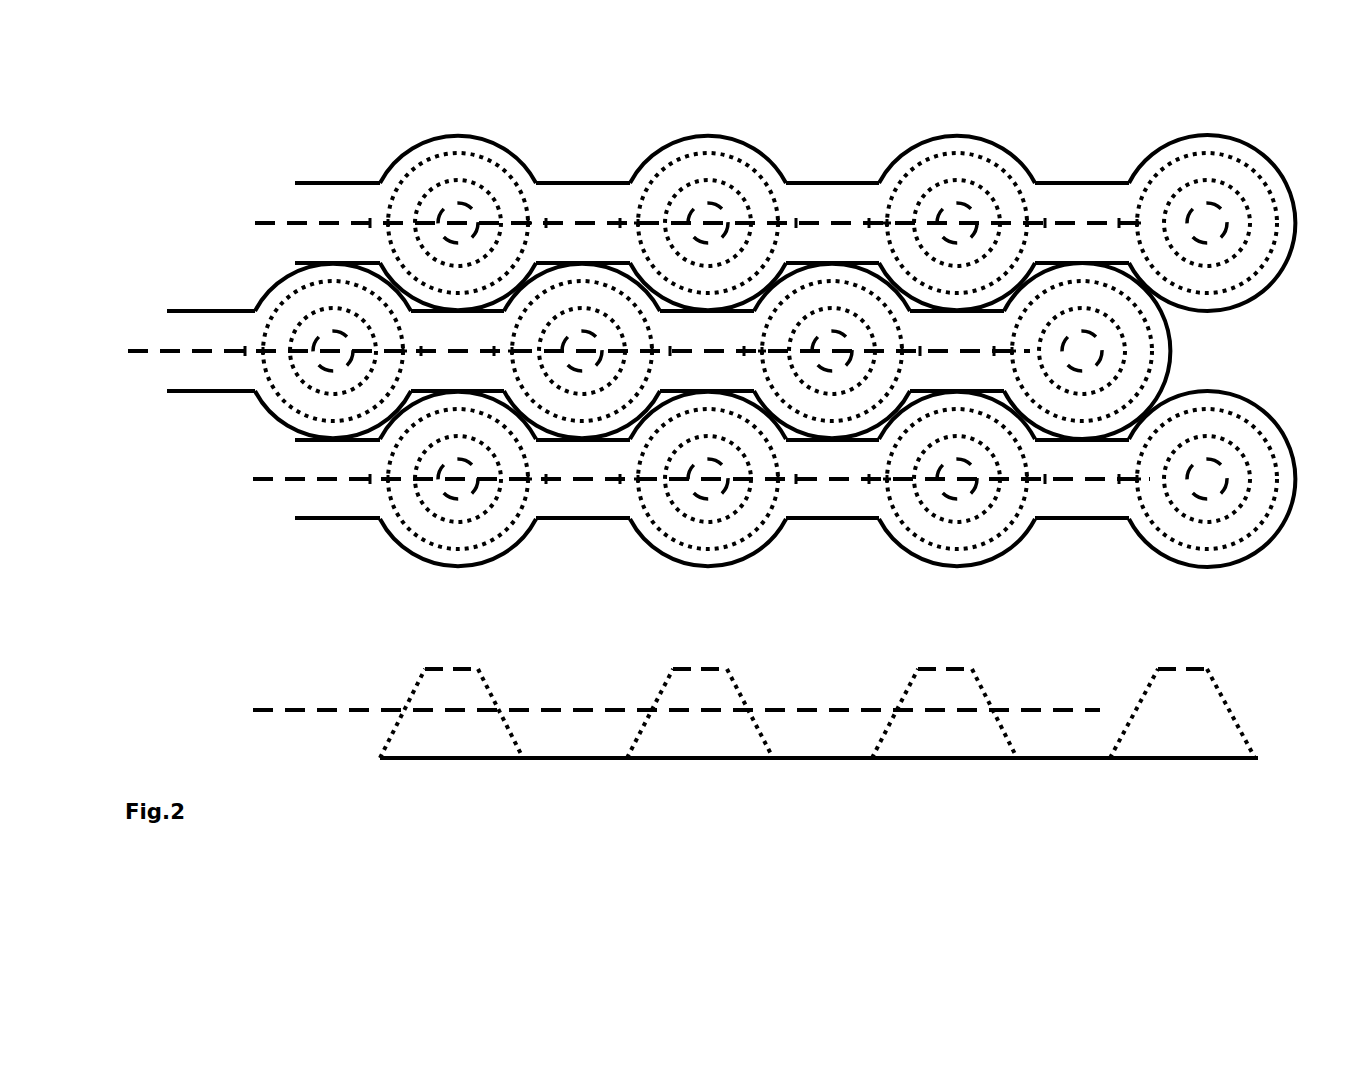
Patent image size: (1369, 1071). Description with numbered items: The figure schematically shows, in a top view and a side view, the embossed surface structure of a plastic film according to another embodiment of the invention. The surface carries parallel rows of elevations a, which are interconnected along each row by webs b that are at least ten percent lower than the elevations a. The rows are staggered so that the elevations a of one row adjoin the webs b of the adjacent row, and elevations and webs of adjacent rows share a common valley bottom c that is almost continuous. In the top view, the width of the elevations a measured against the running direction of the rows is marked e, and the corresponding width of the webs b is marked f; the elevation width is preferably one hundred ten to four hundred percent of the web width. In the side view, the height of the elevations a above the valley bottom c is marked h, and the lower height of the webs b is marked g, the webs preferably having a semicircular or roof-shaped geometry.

The elevations a is at (572, 385).
The webs b is at (692, 370).
The common valley bottom c is at (948, 337).
The width of the elevations e is at (268, 263).
The width of the webs f is at (285, 430).
The height of the webs g is at (1080, 703).
The height of the elevations h is at (1192, 668).